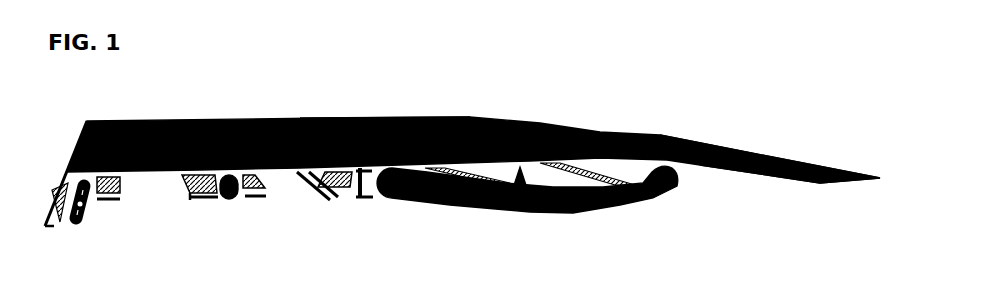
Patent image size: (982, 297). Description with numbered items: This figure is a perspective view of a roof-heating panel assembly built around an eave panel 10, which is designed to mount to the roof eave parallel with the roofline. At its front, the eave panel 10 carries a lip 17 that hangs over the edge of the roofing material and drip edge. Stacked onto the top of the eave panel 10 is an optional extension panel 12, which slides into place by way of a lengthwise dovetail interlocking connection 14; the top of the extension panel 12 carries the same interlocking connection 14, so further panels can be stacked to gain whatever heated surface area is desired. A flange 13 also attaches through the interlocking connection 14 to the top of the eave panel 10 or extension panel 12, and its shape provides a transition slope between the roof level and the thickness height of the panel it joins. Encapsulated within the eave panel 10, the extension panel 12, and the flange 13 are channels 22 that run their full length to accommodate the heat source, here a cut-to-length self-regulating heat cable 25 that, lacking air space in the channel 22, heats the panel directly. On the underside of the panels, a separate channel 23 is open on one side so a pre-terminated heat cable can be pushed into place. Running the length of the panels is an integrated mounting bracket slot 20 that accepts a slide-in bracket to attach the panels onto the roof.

The eave panel 10 is at (248, 124).
The extension panel 12 is at (388, 119).
The flange 13 is at (661, 136).
The interlocking connection 14 is at (368, 200).
The front lip 17 is at (45, 226).
The mounting bracket slot 20 is at (112, 201).
The channel 22 is at (235, 198).
The channel 23 is at (100, 175).
The heat cable 25 is at (77, 223).